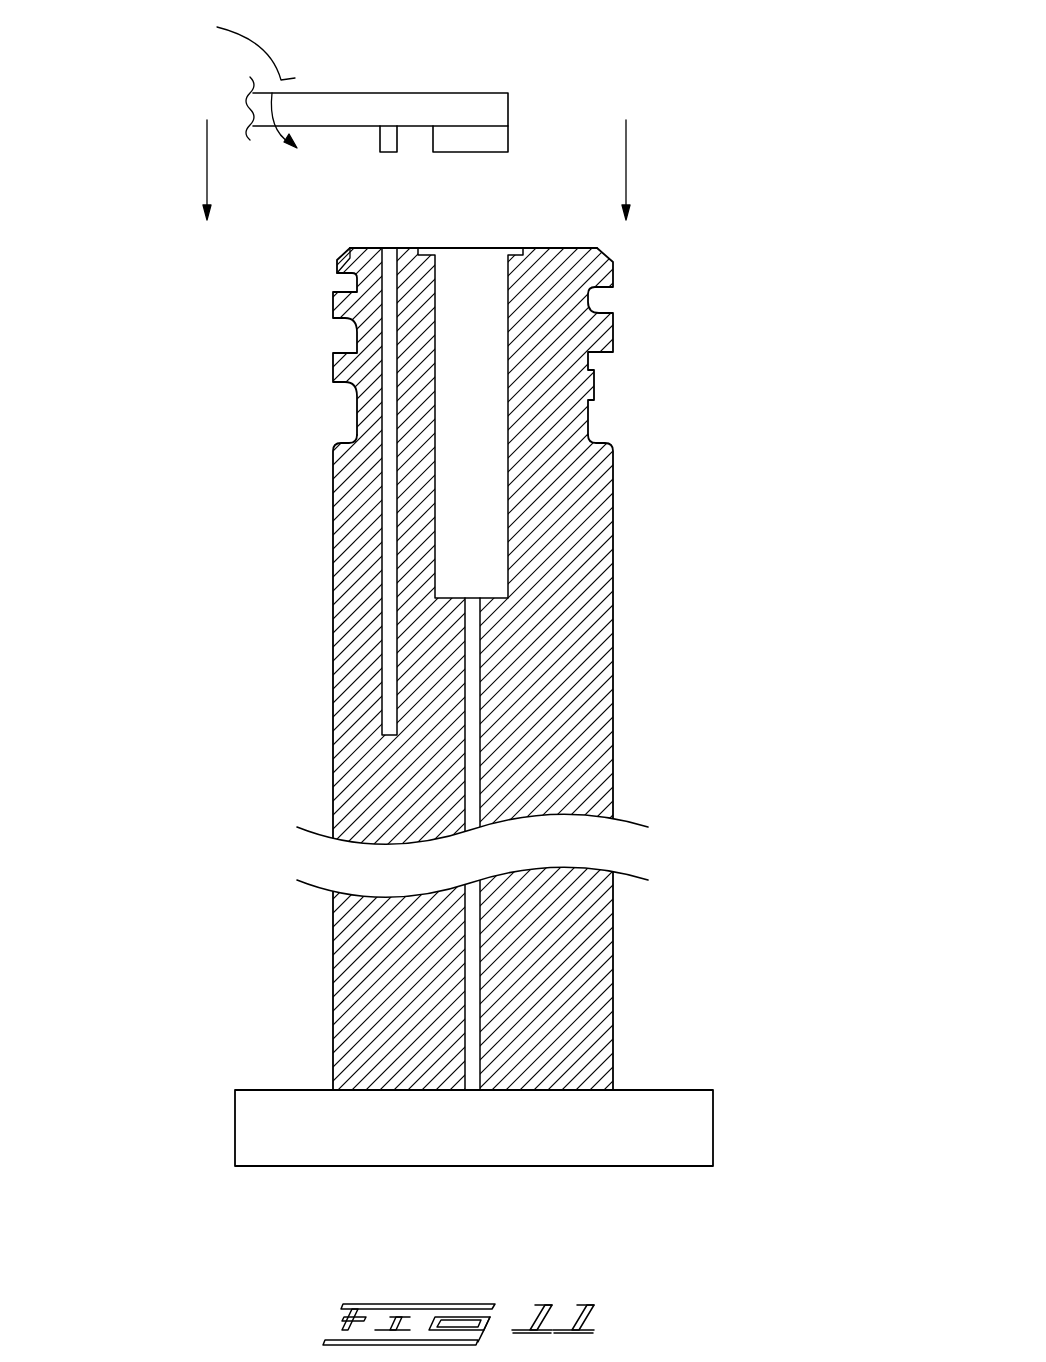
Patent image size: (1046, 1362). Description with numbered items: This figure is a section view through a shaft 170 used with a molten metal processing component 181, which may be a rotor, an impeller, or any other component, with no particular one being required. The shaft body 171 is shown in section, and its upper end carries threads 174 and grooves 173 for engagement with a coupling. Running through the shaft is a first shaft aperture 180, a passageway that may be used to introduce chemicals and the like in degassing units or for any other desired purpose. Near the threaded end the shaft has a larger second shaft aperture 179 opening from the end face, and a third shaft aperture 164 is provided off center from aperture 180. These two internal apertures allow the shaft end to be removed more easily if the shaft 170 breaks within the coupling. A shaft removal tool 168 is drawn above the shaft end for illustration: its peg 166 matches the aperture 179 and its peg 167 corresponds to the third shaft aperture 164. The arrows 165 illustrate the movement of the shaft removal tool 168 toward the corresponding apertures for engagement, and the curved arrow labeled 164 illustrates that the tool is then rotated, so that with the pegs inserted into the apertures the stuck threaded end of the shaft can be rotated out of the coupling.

The third shaft aperture 164 is at (378, 593).
The arrows 165 is at (205, 168).
The peg 166 is at (493, 143).
The peg 167 is at (388, 153).
The shaft removal tool 168 is at (335, 100).
The shaft 170 is at (678, 601).
The shaft body 171 is at (615, 717).
The grooves 173 is at (338, 278).
The threads 174 is at (602, 325).
The second shaft aperture 179 is at (497, 400).
The first shaft aperture 180 is at (472, 715).
The molten metal processing component 181 is at (676, 1090).